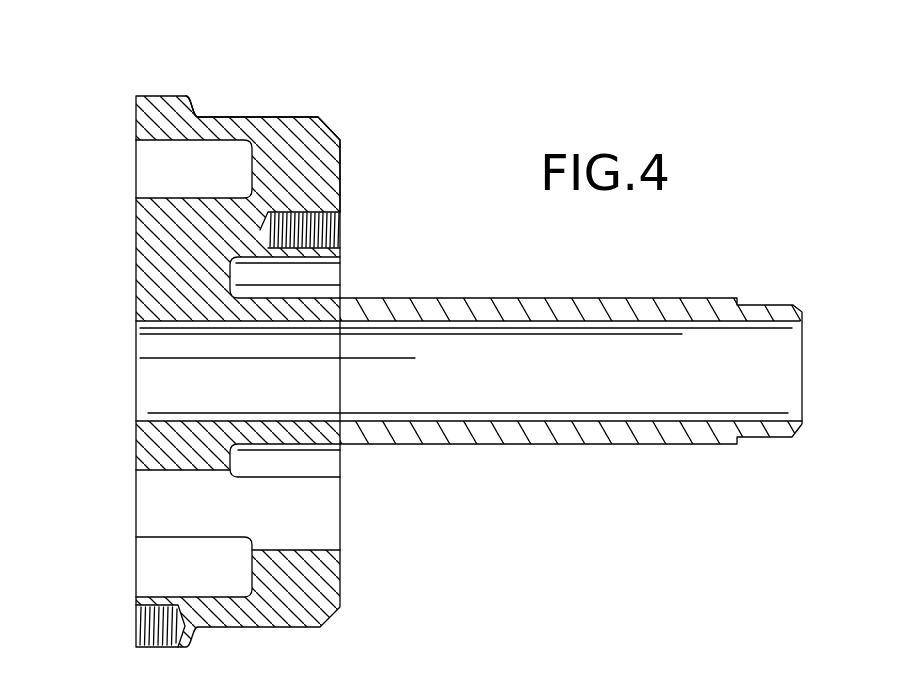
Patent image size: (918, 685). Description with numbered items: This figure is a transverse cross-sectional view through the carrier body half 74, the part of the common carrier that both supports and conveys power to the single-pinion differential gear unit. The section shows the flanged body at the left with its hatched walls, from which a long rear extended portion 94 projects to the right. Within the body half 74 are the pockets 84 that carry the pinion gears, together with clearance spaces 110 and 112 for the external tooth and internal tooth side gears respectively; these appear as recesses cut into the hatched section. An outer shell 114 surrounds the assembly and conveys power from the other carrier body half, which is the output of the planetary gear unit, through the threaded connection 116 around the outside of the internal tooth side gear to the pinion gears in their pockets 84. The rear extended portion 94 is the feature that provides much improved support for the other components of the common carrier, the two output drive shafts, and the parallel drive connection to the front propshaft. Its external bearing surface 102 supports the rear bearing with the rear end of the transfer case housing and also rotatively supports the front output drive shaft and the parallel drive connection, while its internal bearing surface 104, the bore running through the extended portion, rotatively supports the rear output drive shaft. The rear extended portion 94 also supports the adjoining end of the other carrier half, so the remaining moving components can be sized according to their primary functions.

The carrier body half 74 is at (162, 93).
The outer shell 114 is at (255, 118).
The clearance space 112 is at (187, 142).
The clearance space 110 is at (340, 277).
The external bearing surface 102 is at (595, 298).
The rear extended portion 94 is at (518, 312).
The internal bearing surface 104 is at (680, 413).
The pocket 84 is at (330, 548).
The threaded connection 116 is at (136, 625).